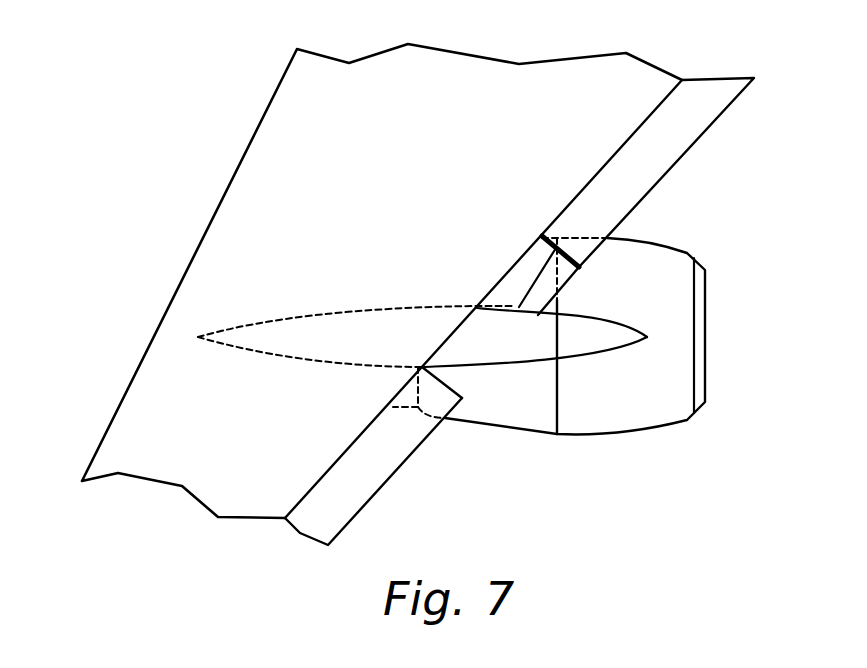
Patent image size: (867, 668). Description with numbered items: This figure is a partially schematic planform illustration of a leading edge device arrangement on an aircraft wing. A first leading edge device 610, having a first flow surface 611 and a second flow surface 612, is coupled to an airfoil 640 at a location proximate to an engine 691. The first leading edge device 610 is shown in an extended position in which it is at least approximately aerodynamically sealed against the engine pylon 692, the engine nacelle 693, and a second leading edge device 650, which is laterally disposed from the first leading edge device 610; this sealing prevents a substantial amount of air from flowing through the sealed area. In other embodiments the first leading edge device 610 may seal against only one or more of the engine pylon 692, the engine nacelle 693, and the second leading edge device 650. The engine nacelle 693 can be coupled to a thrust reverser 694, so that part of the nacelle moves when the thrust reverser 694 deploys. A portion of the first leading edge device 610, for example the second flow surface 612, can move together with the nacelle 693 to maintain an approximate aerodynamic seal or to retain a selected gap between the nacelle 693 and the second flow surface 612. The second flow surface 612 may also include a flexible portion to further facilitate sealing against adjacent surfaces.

The airfoil 640 is at (165, 452).
The second leading edge device 650 is at (678, 127).
The first leading edge device 610 is at (528, 277).
The first flow surface 611 is at (544, 264).
The second flow surface 612 is at (570, 256).
The engine 691 is at (613, 485).
The engine pylon 692 is at (477, 333).
The engine nacelle 693 is at (563, 306).
The thrust reverser 694 is at (548, 405).